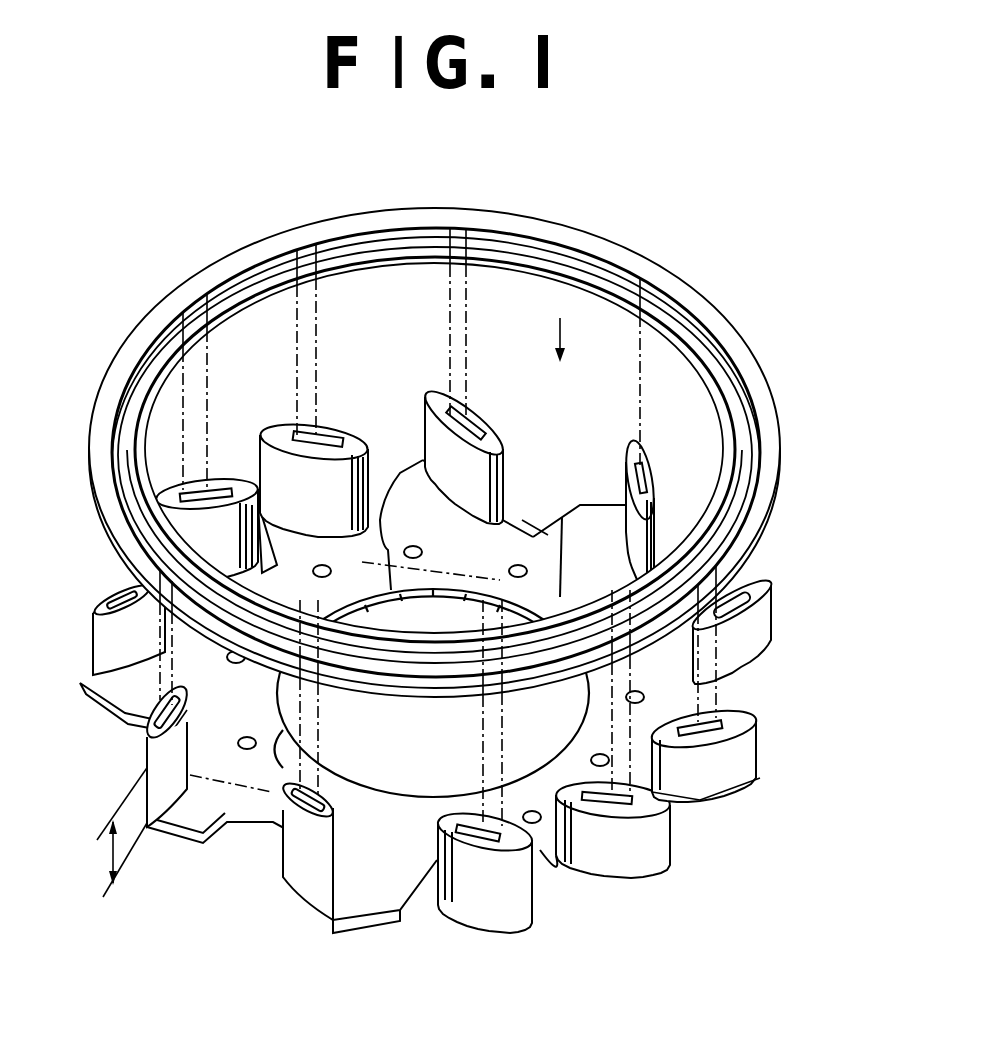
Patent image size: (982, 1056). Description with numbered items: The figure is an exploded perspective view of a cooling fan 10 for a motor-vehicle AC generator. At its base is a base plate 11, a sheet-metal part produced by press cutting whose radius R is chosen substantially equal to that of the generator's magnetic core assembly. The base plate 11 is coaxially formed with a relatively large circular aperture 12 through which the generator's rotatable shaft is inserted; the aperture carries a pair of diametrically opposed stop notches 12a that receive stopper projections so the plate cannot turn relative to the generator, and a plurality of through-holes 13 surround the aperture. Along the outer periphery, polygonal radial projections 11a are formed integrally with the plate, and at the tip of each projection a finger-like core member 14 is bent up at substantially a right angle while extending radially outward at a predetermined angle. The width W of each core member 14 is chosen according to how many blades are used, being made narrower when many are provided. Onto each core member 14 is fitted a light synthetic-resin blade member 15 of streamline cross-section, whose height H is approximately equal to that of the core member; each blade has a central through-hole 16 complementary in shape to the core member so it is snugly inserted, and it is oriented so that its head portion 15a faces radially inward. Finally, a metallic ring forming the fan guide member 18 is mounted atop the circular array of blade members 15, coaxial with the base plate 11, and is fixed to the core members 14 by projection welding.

The cooling fan 10 is at (475, 452).
The base plate 11 is at (558, 860).
The radial projections 11a is at (374, 887).
The circular aperture 12 is at (380, 497).
The stop notches 12a is at (560, 527).
The through-holes 13 is at (535, 535).
The core members 14 is at (290, 878).
The blade members 15 is at (735, 752).
The head portion 15a is at (600, 800).
The through-hole 16 is at (675, 742).
The fan guide member 18 is at (765, 490).
The radius R is at (346, 905).
The width W is at (137, 670).
The height H is at (129, 803).